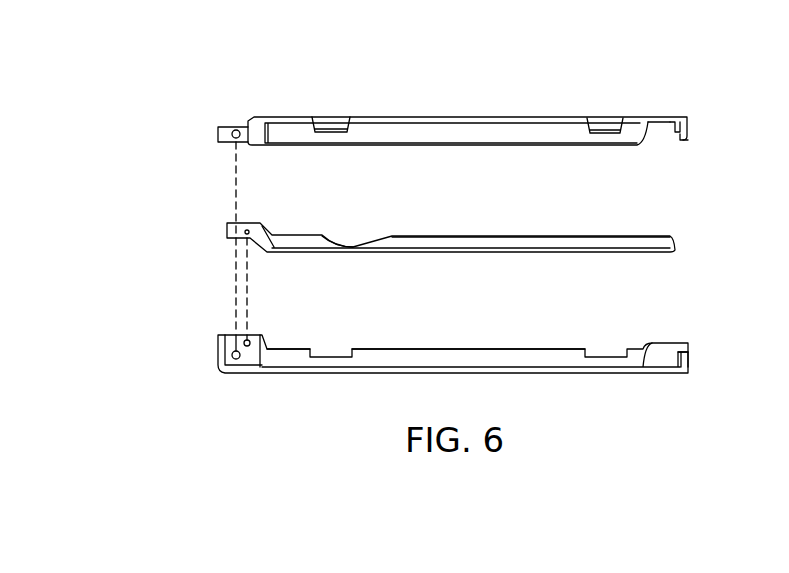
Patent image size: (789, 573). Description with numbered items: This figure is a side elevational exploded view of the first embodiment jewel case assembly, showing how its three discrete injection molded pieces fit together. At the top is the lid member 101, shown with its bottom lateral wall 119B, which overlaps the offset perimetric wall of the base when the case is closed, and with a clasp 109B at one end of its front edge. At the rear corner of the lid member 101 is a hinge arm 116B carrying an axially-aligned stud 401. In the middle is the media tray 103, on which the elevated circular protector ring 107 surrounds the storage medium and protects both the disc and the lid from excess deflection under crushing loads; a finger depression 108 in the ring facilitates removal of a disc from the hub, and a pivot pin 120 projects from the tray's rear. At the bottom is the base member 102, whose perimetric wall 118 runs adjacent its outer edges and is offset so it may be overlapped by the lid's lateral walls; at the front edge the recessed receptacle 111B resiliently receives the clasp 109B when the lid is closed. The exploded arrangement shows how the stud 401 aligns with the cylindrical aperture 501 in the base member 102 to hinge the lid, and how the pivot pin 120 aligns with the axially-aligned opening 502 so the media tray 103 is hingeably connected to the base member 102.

The lid member 101 is at (478, 107).
The hinge arm 116B is at (224, 131).
The axially-aligned stud 401 is at (235, 129).
The bottom lateral wall 119B is at (450, 132).
The clasp 109B is at (688, 137).
The media tray 103 is at (580, 262).
The pivot pin 120 is at (250, 227).
The finger depression 108 is at (357, 245).
The circular protector ring 107 is at (557, 243).
The base member 102 is at (375, 382).
The cylindrical aperture 501 is at (222, 360).
The axially-aligned opening 502 is at (256, 335).
The perimetric wall 118 is at (475, 357).
The recessed receptacle 111B is at (690, 353).